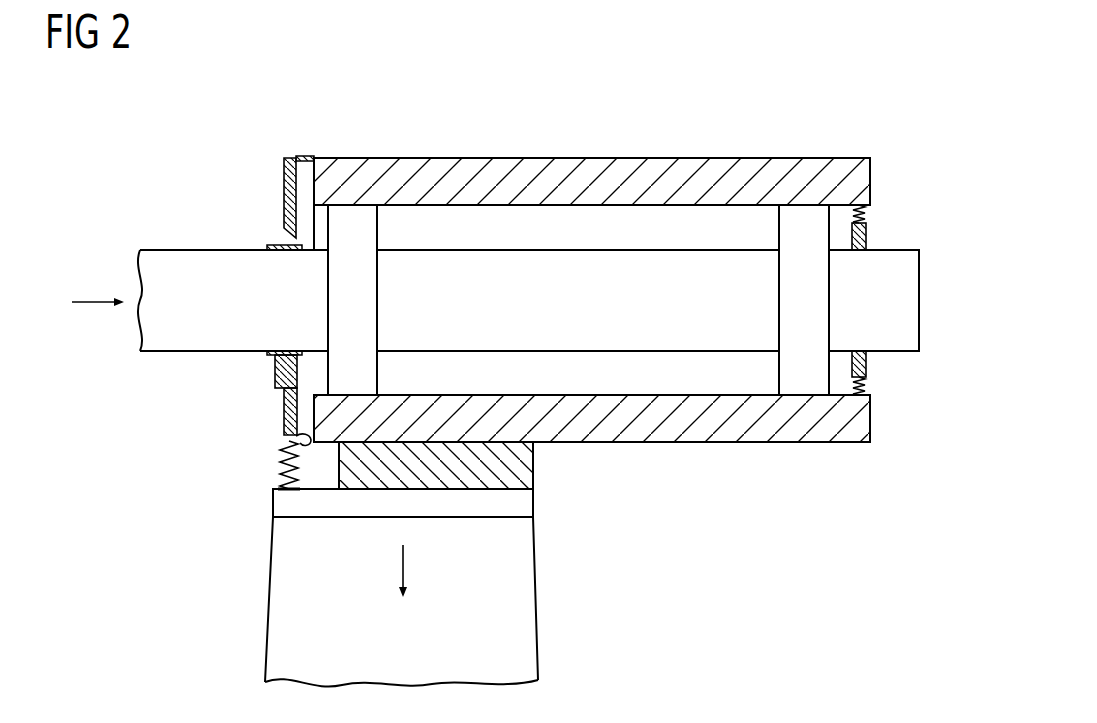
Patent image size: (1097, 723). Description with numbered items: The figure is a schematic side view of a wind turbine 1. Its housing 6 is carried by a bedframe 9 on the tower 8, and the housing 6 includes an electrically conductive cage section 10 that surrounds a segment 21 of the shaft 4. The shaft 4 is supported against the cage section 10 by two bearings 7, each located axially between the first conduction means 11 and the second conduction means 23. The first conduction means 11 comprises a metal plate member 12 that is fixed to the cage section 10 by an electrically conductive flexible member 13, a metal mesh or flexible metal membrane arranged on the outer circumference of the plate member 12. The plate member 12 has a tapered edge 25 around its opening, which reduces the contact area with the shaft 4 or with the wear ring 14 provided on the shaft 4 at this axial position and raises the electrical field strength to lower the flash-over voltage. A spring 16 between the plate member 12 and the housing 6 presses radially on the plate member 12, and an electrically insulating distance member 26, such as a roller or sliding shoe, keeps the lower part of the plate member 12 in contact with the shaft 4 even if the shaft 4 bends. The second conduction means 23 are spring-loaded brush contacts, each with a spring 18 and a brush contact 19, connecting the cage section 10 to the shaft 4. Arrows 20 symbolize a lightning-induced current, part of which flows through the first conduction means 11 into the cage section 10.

The wind turbine 1 is at (736, 79).
The shaft 4 is at (160, 248).
The housing 6 is at (515, 466).
The bearings 7 is at (358, 220).
The tower 8 is at (537, 555).
The bedframe 9 is at (515, 502).
The cage section 10 is at (652, 158).
The first conduction means 11 is at (267, 162).
The plate member 12 is at (284, 198).
The flexible member 13 is at (304, 157).
The wear ring 14 is at (275, 245).
The spring 16 is at (283, 473).
The spring 18 is at (866, 384).
The brush contact 19 is at (866, 360).
The arrows 20 is at (88, 300).
The segment 21 is at (524, 275).
The second conduction means 23 is at (885, 218).
The tapered edge 25 is at (285, 228).
The distance member 26 is at (275, 373).